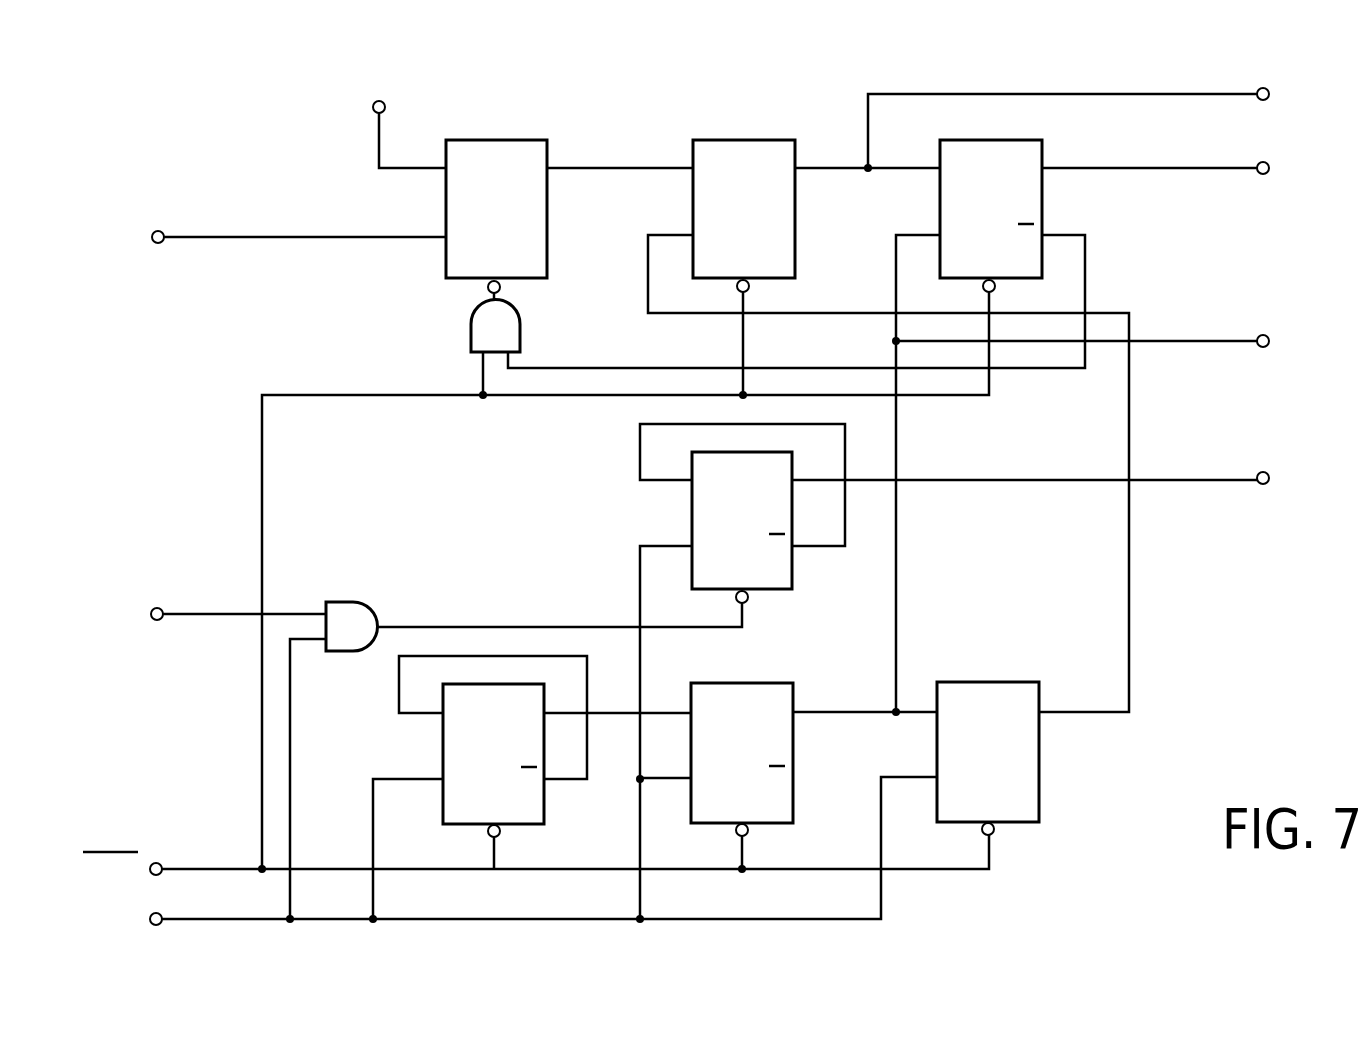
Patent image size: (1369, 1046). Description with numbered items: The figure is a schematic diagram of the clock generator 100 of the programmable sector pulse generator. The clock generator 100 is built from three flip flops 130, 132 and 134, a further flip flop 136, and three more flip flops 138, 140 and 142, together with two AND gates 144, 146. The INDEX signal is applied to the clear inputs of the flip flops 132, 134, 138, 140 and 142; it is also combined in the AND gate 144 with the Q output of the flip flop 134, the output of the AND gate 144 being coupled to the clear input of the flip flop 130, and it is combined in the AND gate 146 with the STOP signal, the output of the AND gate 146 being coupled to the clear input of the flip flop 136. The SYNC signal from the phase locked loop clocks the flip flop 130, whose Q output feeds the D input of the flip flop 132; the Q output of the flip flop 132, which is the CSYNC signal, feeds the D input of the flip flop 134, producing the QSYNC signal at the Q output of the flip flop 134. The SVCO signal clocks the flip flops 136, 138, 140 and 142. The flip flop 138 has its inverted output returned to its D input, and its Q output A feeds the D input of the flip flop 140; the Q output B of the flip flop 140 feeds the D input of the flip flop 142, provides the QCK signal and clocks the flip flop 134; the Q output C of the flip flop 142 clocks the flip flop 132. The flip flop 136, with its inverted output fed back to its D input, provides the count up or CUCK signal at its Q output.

The clock generator 100 is at (1192, 663).
The flip flop 130 is at (548, 260).
The flip flop 132 is at (797, 243).
The flip flop 134 is at (1043, 215).
The flip flop 136 is at (690, 520).
The flip flop 138 is at (440, 753).
The flip flop 140 is at (795, 767).
The flip flop 142 is at (1040, 765).
The AND gate 144 is at (471, 340).
The AND gate 146 is at (363, 603).